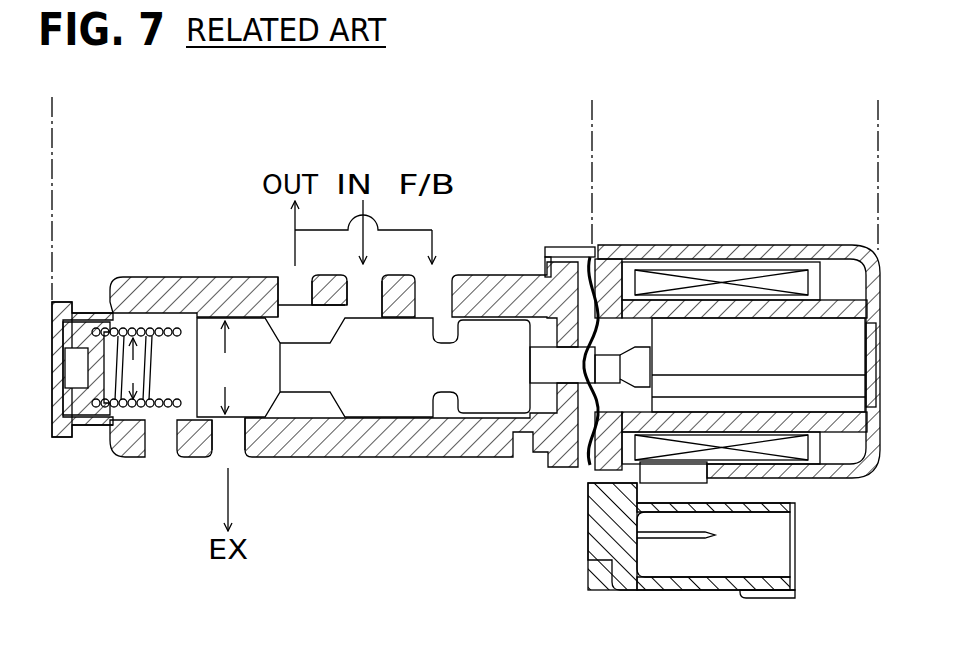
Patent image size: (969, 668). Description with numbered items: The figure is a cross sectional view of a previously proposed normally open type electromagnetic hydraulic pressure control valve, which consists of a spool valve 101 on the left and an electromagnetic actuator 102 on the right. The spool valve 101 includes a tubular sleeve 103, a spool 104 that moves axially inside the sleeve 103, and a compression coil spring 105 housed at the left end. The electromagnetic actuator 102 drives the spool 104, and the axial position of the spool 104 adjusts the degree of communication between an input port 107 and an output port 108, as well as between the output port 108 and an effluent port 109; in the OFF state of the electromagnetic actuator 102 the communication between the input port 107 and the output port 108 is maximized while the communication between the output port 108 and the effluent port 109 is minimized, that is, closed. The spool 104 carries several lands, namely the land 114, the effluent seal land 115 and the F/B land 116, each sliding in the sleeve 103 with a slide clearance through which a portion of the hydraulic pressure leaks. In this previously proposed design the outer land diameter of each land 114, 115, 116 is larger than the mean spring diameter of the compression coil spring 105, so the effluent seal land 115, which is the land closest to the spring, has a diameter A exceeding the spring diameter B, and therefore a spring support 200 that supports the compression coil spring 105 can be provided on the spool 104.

The spool valve 101 is at (591, 117).
The electromagnetic actuator 102 is at (877, 117).
The sleeve 103 is at (127, 266).
The spool 104 is at (485, 315).
The compression coil spring 105 is at (114, 433).
The input port 107 is at (372, 295).
The output port 108 is at (297, 295).
The effluent port 109 is at (232, 442).
The land 114 is at (390, 403).
The effluent seal land 115 is at (207, 422).
The F/B land 116 is at (485, 403).
The spring support 200 is at (191, 300).